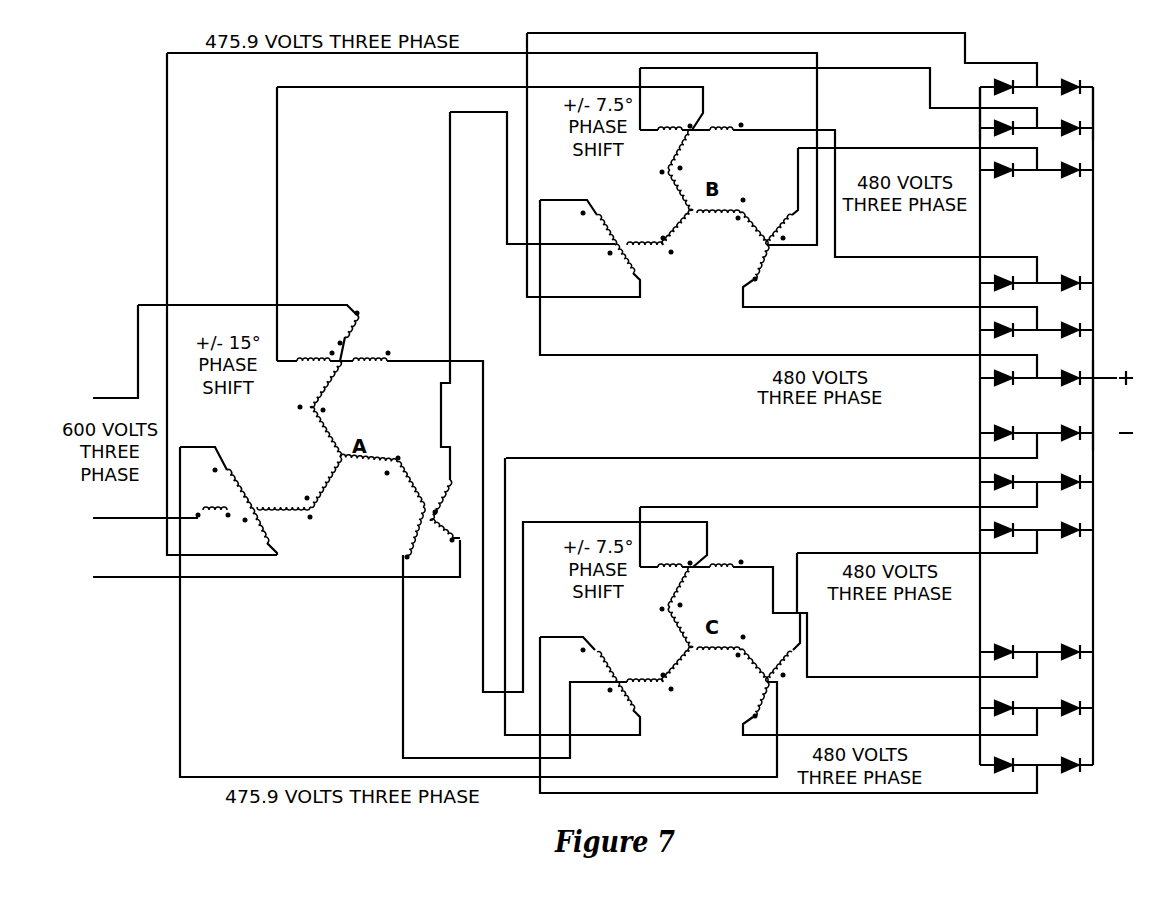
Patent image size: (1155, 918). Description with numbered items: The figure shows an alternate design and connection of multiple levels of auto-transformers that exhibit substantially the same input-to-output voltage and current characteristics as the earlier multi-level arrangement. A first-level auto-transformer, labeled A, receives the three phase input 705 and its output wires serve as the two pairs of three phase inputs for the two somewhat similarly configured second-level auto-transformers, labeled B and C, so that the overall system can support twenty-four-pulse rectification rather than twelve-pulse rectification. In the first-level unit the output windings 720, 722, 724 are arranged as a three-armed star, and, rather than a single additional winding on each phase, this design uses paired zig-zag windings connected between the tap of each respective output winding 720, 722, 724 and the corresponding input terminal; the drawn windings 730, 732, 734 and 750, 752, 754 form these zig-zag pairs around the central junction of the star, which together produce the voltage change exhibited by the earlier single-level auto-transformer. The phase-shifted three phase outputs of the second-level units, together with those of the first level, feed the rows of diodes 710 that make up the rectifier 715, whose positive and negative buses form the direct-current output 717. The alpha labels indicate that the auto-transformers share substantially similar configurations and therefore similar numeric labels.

The 600 volt three phase input 705 is at (107, 400).
The diode 710 is at (960, 788).
The rectifier bridge 715 is at (1063, 72).
The DC output 717 is at (1135, 357).
The output winding 720 is at (388, 353).
The output winding 722 is at (449, 479).
The output winding 724 is at (270, 530).
The winding 730 is at (330, 388).
The winding 732 is at (392, 492).
The winding 734 is at (287, 502).
The winding 750 is at (363, 323).
The winding 752 is at (447, 542).
The winding 754 is at (210, 517).